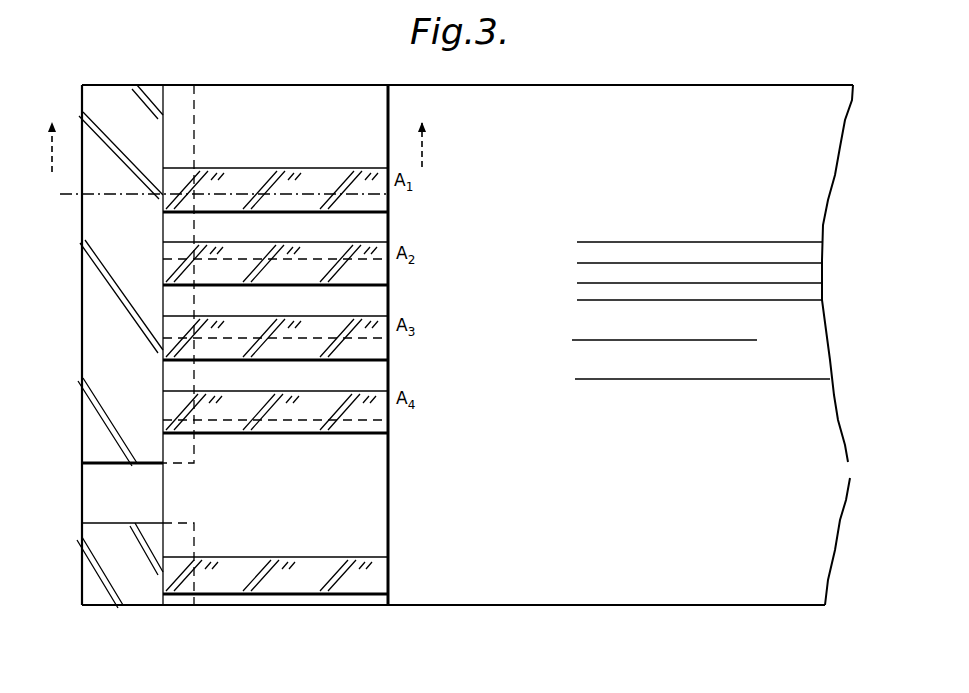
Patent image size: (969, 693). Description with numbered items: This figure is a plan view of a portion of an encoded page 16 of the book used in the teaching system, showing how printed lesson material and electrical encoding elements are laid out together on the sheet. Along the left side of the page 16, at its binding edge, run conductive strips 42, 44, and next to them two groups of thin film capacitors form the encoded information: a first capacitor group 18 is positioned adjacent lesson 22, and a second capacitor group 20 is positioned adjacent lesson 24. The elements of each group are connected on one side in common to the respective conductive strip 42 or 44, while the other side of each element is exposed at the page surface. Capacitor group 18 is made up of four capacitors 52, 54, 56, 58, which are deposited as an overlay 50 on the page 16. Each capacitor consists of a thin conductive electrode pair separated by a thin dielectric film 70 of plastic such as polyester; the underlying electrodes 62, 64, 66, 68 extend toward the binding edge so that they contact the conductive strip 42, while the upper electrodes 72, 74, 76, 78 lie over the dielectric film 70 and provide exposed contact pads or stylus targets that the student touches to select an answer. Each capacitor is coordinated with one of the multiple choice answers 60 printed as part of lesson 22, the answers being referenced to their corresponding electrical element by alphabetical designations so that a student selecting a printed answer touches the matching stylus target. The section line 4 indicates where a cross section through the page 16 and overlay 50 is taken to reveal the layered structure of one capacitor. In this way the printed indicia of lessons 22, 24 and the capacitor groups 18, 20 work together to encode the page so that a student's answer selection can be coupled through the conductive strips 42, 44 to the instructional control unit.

The section line 4— 4 is at (229, 167).
The page 16 is at (622, 100).
The capacitor group 18 is at (368, 140).
The capacitor group 20 is at (370, 548).
The lesson 22 is at (742, 100).
The lesson 24 is at (785, 548).
The conductive strip 42 is at (92, 342).
The conductive strip 44 is at (100, 557).
The overlay 50 is at (318, 83).
The capacitor 52 is at (390, 206).
The capacitor 54 is at (390, 272).
The capacitor 56 is at (391, 348).
The capacitor 58 is at (391, 425).
The multiple choice answers 60 is at (812, 393).
The underlying electrode 62 is at (265, 170).
The underlying electrode 64 is at (265, 248).
The underlying electrode 66 is at (265, 318).
The underlying electrode 68 is at (255, 412).
The dielectric film 70 is at (212, 98).
The upper electrode 72 is at (342, 178).
The upper electrode 74 is at (363, 248).
The upper electrode 76 is at (375, 318).
The upper electrode 78 is at (367, 396).